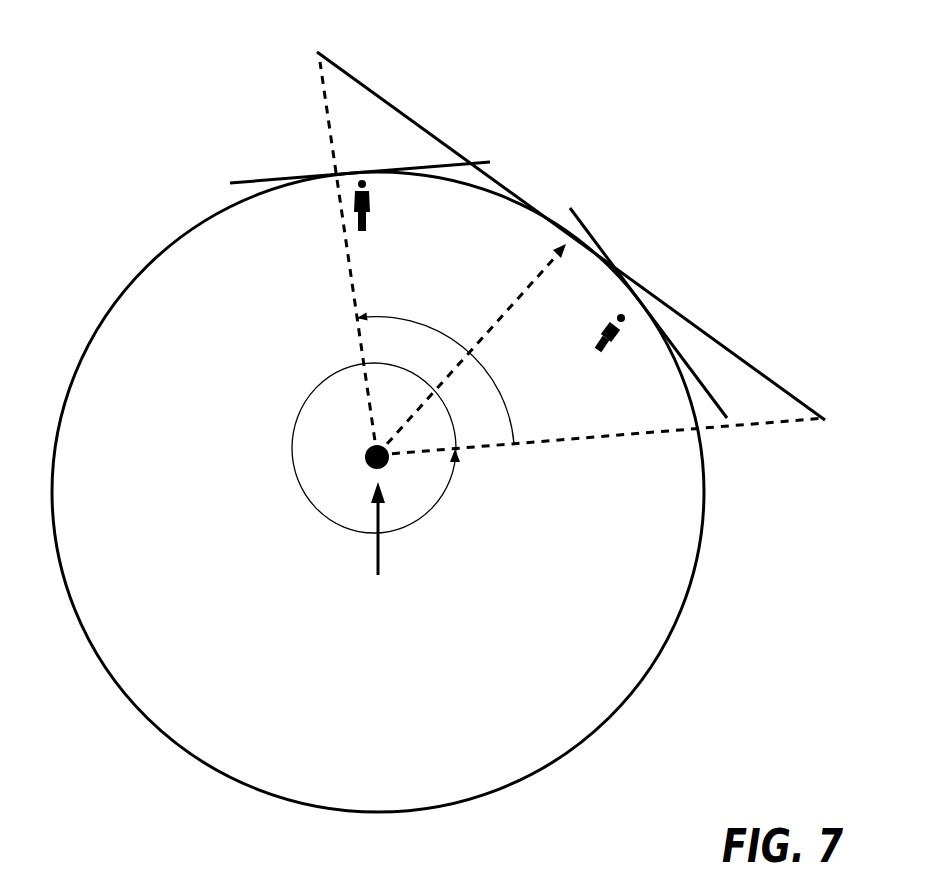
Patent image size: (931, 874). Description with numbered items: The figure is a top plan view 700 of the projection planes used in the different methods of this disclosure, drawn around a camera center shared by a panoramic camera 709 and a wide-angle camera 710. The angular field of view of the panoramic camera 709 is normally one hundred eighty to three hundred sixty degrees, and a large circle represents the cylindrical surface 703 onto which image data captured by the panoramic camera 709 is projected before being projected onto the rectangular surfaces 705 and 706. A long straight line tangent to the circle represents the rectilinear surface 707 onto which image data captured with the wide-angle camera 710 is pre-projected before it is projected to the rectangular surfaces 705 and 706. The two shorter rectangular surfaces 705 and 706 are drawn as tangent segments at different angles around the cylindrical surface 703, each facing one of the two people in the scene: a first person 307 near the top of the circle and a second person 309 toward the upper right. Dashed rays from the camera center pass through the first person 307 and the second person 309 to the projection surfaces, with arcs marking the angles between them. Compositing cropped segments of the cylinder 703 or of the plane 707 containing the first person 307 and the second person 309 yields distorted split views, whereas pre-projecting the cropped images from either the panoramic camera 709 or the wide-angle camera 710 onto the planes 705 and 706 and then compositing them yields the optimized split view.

The top plan view 700 is at (654, 62).
The cylindrical surface 703 is at (120, 706).
The rectangular surface 705 is at (264, 158).
The rectangular surface 706 is at (597, 219).
The rectilinear surface 707 is at (359, 64).
The first person 307 is at (382, 218).
The second person 309 is at (588, 331).
The panoramic camera 709 is at (378, 569).
The wide-angle camera 710 is at (376, 528).